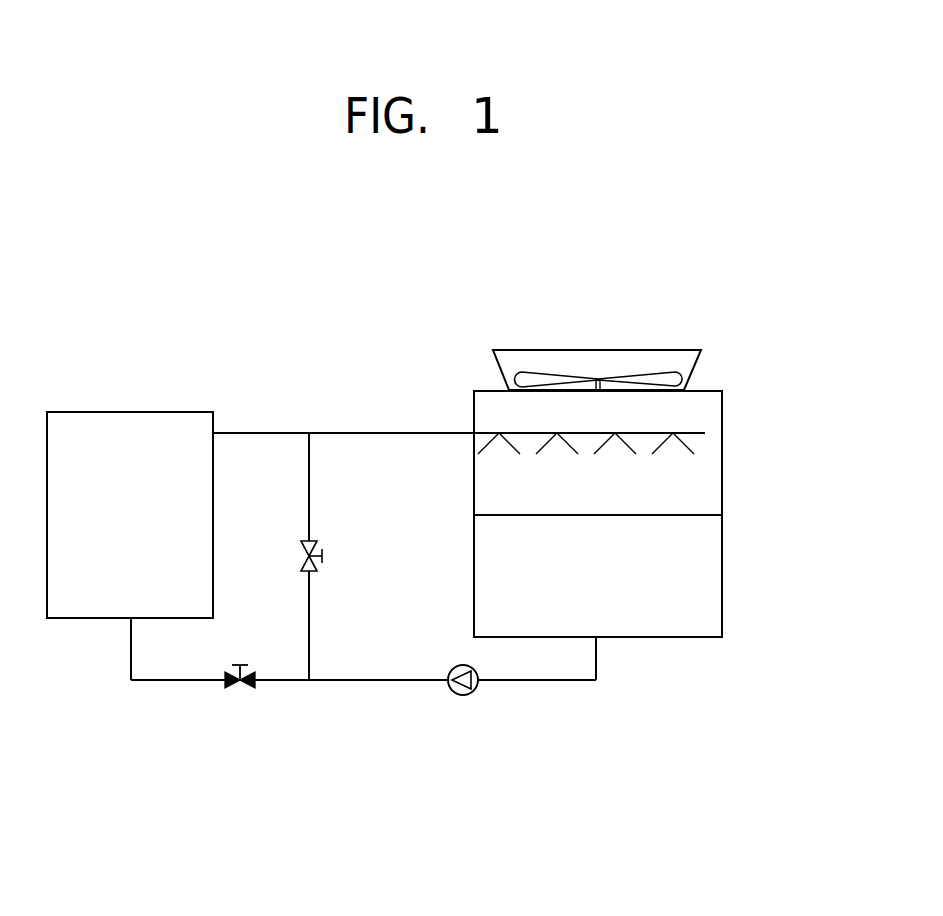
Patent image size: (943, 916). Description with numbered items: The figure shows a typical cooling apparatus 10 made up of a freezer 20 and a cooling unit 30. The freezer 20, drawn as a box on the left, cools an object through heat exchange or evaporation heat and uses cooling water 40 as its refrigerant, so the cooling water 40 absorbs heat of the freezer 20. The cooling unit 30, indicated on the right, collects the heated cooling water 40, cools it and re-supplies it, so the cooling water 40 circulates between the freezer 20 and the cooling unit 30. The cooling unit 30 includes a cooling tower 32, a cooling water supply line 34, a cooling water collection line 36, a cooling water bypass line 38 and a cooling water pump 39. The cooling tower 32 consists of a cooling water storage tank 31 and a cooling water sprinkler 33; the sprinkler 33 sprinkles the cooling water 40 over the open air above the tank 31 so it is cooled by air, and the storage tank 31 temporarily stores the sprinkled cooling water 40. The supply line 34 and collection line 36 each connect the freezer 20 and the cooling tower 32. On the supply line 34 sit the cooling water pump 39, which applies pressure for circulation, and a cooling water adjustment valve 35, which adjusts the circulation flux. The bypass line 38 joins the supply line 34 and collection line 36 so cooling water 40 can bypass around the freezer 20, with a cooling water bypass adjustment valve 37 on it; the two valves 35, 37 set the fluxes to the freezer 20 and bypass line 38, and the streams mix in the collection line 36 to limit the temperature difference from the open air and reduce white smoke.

The cooling apparatus 10 is at (760, 261).
The freezer 20 is at (130, 412).
The cooling unit 30 is at (418, 364).
The cooling water storage tank 31 is at (722, 583).
The cooling tower 32 is at (788, 402).
The cooling water sprinkler 33 is at (688, 430).
The cooling water supply line 34 is at (378, 682).
The cooling water adjustment valve 35 is at (245, 688).
The cooling water collection line 36 is at (342, 433).
The cooling water bypass adjustment valve 37 is at (325, 556).
The cooling water bypass line 38 is at (309, 605).
The cooling water pump 39 is at (462, 695).
The cooling water 40 is at (610, 591).